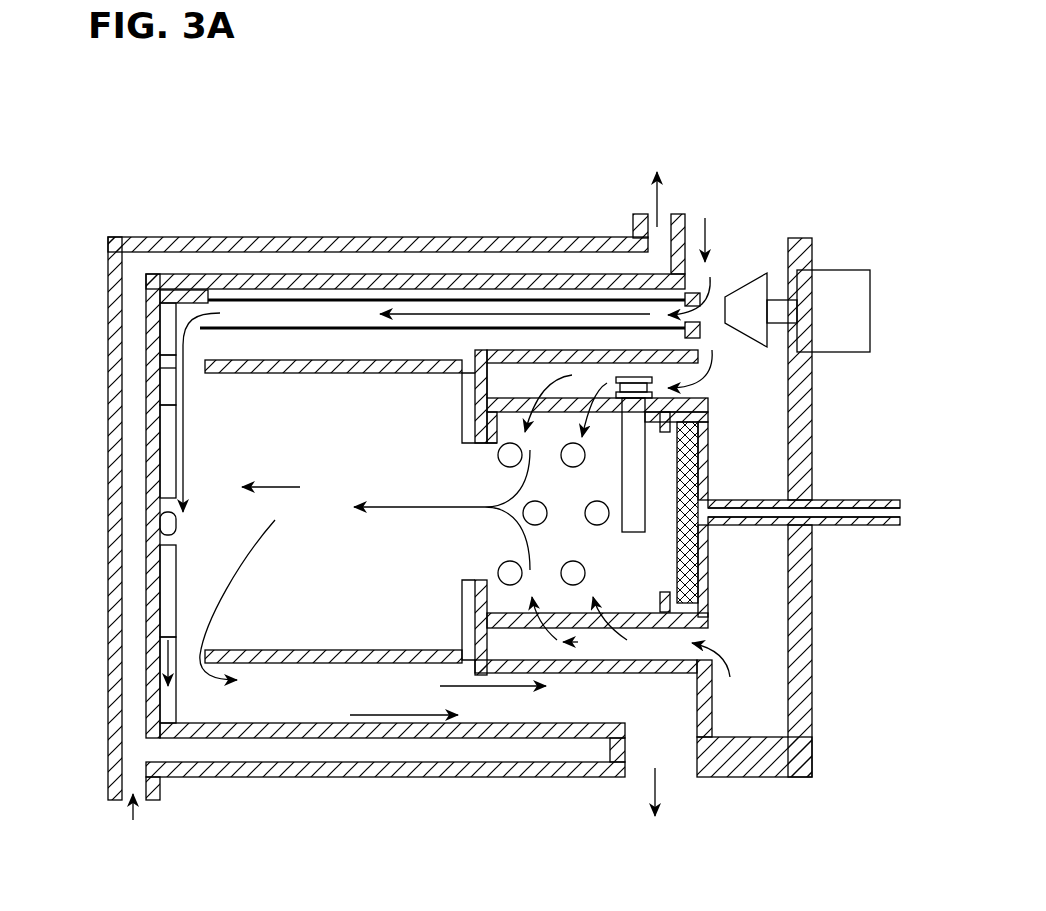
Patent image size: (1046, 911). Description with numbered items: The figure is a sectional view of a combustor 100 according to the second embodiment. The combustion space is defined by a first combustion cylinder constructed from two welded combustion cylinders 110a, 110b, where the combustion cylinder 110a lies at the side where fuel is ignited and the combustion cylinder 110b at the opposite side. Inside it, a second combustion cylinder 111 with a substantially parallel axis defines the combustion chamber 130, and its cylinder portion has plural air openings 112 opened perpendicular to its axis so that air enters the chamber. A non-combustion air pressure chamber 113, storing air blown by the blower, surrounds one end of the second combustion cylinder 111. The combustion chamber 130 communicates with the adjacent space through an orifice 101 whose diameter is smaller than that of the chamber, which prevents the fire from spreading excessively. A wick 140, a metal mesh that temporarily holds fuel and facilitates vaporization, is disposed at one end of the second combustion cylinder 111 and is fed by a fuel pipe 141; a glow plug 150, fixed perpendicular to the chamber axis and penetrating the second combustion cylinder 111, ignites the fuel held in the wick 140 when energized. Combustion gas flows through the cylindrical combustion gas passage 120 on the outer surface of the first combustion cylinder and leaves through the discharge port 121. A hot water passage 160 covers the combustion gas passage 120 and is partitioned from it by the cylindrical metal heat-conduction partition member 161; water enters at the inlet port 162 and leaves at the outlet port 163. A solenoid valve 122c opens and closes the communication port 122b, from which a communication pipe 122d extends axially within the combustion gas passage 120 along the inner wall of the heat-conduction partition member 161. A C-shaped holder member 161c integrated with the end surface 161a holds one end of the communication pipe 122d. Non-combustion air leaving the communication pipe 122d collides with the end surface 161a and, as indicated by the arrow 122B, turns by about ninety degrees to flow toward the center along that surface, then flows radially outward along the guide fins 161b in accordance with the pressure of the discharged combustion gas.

The combustor 100 is at (310, 180).
The orifice 101 is at (478, 540).
The combustion cylinder 110a is at (495, 675).
The combustion cylinder 110b is at (263, 664).
The second combustion cylinder 111 is at (498, 378).
The air openings 112 is at (557, 443).
The non-combustion air pressure chamber 113 is at (692, 587).
The combustion gas passage 120 is at (287, 345).
The discharge port 121 is at (668, 767).
The arrow 122B is at (148, 356).
The communication port 122b is at (693, 317).
The solenoid valve 122c is at (825, 274).
The communication pipe 122d is at (255, 298).
The combustion chamber 130 is at (540, 397).
The wick 140 is at (747, 570).
The fuel pipe 141 is at (843, 530).
The glow plug 150 is at (633, 470).
The hot water passage 160 is at (595, 397).
The heat-conduction partition member 161 is at (205, 273).
The end surface 161a is at (163, 515).
The guide fins 161b is at (167, 335).
The holder member 161c is at (180, 295).
The inlet port 162 is at (140, 793).
The outlet port 163 is at (652, 213).